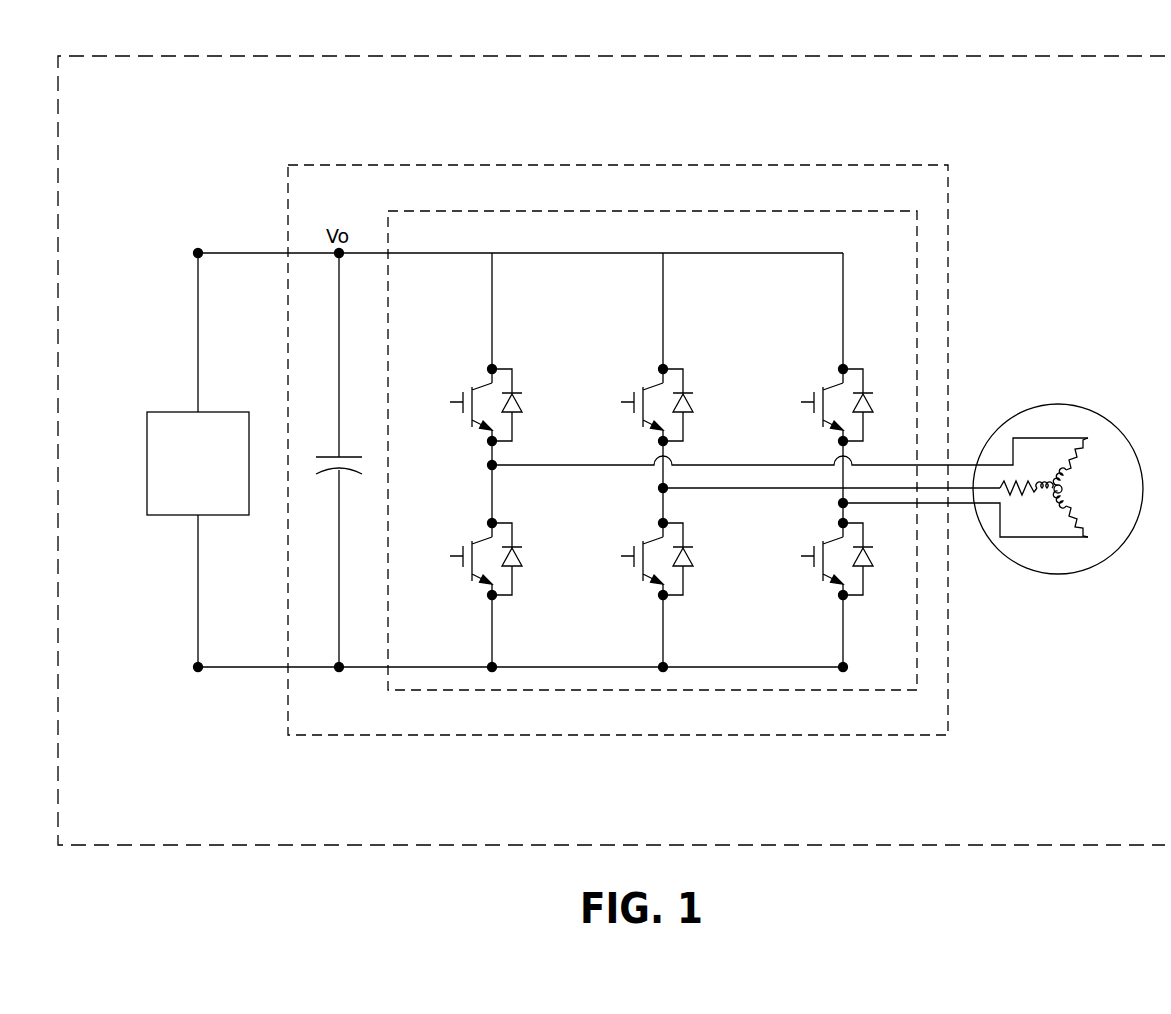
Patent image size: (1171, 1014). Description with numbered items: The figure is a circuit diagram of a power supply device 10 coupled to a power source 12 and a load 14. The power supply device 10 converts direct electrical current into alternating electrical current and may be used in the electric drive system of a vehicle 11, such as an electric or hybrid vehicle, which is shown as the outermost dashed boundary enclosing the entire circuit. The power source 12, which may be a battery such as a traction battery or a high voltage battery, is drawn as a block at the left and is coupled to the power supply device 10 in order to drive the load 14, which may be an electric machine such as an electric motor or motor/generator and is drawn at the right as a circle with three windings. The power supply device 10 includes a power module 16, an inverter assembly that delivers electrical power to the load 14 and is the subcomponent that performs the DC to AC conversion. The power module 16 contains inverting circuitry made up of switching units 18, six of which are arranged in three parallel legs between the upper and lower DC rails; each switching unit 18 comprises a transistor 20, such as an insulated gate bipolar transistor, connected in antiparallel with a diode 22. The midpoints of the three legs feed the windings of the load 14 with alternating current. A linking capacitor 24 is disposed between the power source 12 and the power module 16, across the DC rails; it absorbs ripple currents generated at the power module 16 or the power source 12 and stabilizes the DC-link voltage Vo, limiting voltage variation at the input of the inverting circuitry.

The power supply device 10 is at (785, 165).
The vehicle 11 is at (992, 56).
The power source 12 is at (175, 412).
The load 14 is at (1058, 403).
The power module 16 is at (692, 211).
The switching unit 18 is at (635, 477).
The transistor 20 is at (630, 475).
The diode 22 is at (698, 475).
The linking capacitor 24 is at (330, 456).